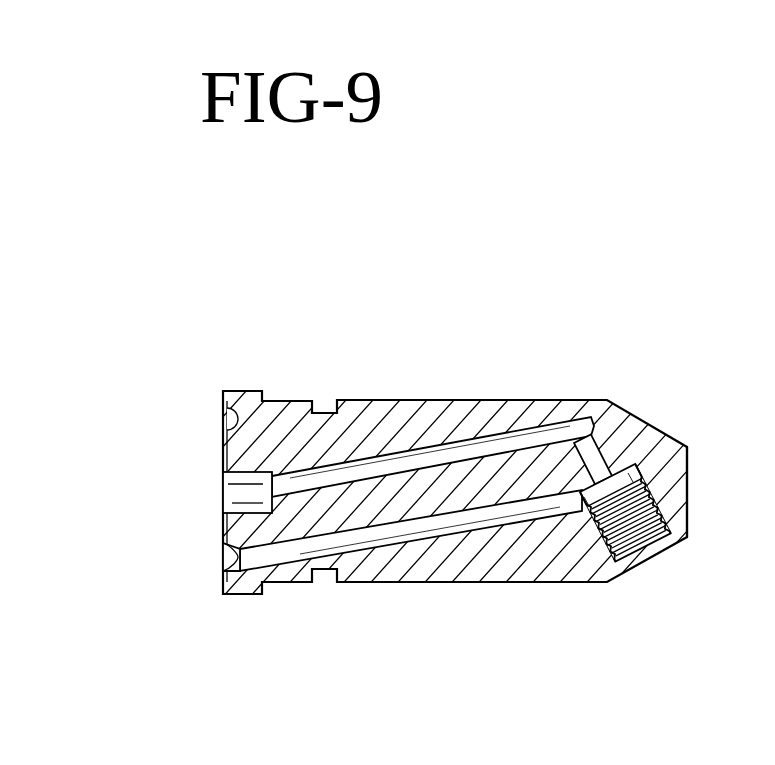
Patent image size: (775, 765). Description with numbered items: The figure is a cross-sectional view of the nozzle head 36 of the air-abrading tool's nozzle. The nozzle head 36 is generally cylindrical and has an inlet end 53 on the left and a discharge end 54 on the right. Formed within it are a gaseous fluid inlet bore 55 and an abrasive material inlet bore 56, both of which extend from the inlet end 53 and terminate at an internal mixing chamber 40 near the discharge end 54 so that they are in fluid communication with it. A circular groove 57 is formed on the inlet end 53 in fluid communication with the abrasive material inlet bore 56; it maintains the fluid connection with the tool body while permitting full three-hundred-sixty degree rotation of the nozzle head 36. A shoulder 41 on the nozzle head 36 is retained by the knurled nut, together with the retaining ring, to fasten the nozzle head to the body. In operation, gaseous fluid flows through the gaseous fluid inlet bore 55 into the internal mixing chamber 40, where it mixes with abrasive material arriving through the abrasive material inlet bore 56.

The nozzle head 36 is at (545, 400).
The internal mixing chamber 40 is at (615, 485).
The shoulder 41 is at (242, 392).
The inlet end 53 is at (222, 401).
The discharge end 54 is at (687, 475).
The gaseous fluid inlet bore 55 is at (372, 452).
The abrasive material inlet bore 56 is at (425, 538).
The circular groove 57 is at (222, 427).